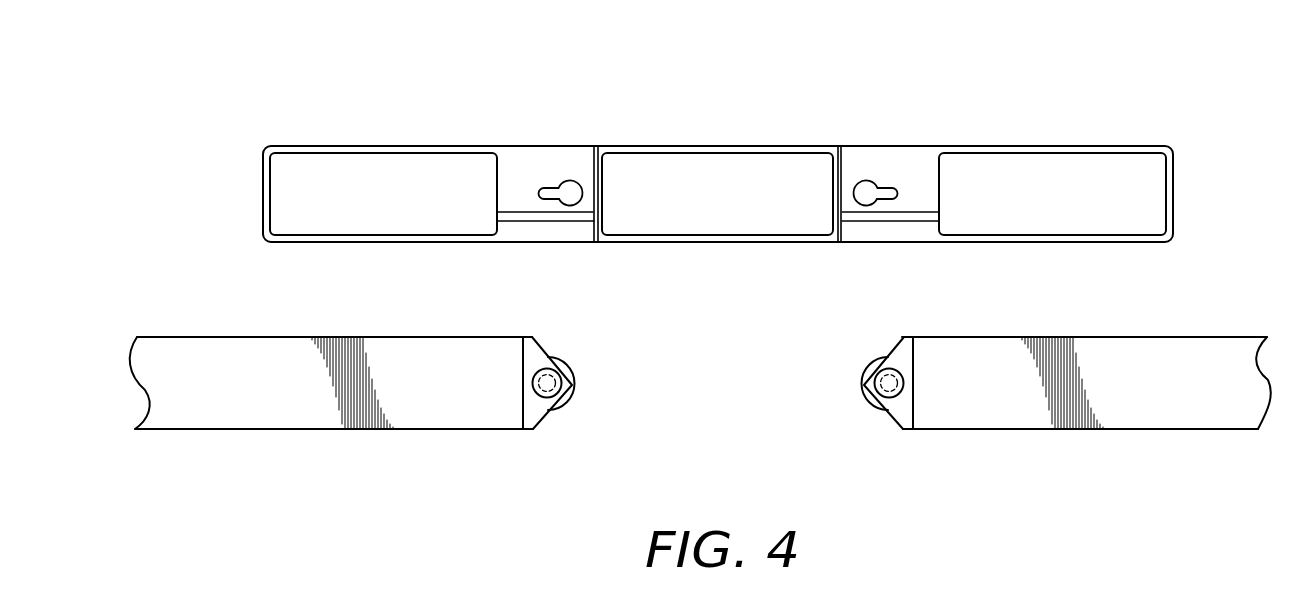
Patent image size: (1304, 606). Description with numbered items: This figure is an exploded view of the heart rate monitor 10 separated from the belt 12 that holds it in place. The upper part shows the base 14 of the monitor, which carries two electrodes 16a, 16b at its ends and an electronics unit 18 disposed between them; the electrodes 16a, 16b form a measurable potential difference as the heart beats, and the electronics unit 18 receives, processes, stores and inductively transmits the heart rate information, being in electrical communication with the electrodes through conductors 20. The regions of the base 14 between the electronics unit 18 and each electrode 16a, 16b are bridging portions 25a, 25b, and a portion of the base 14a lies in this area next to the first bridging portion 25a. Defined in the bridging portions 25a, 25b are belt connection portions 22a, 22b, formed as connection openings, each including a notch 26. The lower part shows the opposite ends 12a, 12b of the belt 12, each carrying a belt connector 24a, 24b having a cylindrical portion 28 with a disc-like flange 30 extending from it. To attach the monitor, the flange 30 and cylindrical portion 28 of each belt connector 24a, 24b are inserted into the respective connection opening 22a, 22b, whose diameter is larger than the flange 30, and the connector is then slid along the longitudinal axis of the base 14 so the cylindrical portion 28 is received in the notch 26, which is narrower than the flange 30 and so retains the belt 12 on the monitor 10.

The heart rate monitor 10 is at (717, 157).
The belt 12 is at (700, 444).
The belt end 12a is at (533, 430).
The belt end 12b is at (903, 430).
The base 14 is at (1128, 242).
The housing partition 14a is at (527, 160).
The electrode 16a is at (302, 207).
The electrode 16b is at (1137, 200).
The electronics unit 18 is at (708, 180).
The conductors 20 is at (566, 216).
The belt connection portion 22a is at (572, 181).
The belt connection portion 22b is at (866, 181).
The belt connector 24a is at (548, 357).
The belt connector 24b is at (888, 357).
The bridging portion 25a is at (512, 167).
The bridging portion 25b is at (922, 162).
The notch 26 is at (544, 201).
The cylindrical portion 28 is at (562, 385).
The flange 30 is at (548, 410).